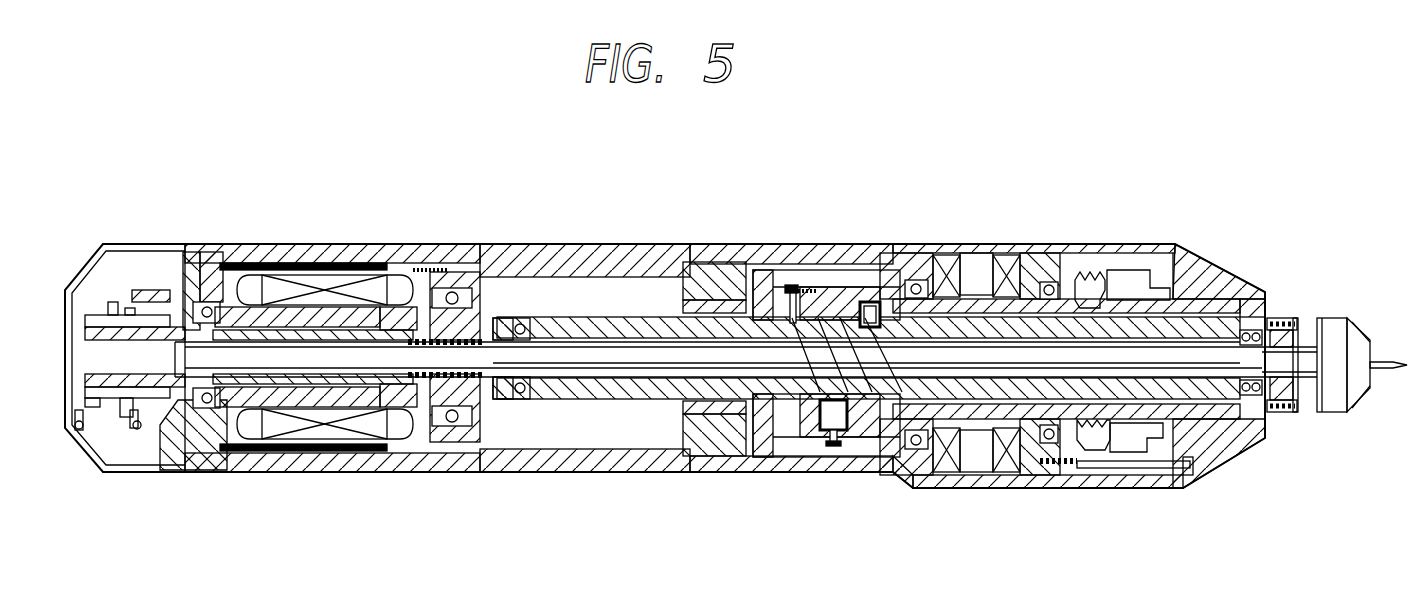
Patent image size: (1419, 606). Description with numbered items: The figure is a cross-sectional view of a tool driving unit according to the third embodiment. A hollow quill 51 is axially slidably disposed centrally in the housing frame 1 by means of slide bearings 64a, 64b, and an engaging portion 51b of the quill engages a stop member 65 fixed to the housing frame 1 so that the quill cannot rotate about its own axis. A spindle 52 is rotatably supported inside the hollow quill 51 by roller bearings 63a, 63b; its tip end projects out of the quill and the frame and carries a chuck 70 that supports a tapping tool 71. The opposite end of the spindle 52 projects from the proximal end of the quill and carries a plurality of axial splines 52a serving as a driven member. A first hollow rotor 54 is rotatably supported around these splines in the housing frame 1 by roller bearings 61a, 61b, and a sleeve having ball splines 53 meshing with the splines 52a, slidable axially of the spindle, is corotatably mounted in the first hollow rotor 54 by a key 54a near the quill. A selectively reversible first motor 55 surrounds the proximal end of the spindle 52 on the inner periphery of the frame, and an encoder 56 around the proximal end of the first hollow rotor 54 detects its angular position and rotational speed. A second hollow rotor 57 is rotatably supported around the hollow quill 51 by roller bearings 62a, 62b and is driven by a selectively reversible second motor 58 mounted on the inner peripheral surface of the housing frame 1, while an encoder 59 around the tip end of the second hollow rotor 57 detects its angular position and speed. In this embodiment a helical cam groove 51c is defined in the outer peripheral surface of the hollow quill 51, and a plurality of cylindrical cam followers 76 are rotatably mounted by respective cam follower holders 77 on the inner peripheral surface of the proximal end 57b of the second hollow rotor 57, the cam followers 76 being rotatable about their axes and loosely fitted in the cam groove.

The housing frame 1 is at (806, 250).
The hollow quill 51 is at (585, 318).
The engaging portion 51b is at (742, 410).
The helical cam groove 51c is at (900, 440).
The spindle 52 is at (662, 357).
The axial splines 52a is at (313, 343).
The ball splines 53 is at (422, 385).
The first hollow rotor 54 is at (247, 407).
The key 54a is at (429, 330).
The first motor 55 is at (350, 290).
The encoder 56 is at (118, 302).
The second hollow rotor 57 is at (1031, 280).
The proximal end of the second hollow rotor 57b is at (893, 285).
The second motor 58 is at (977, 267).
The encoder 59 is at (1133, 280).
The roller bearing 61a is at (204, 268).
The roller bearing 61b is at (460, 290).
The roller bearing 62a is at (914, 447).
The roller bearing 62b is at (1052, 283).
The roller bearing 63a is at (520, 400).
The roller bearing 63b is at (1257, 433).
The slide bearing 64a is at (720, 268).
The slide bearing 64b is at (1234, 310).
The stop member 65 is at (763, 293).
The chuck 70 is at (1332, 337).
The tapping tool 71 is at (1390, 360).
The cam follower 76 is at (845, 272).
The cam follower holder 77 is at (877, 288).